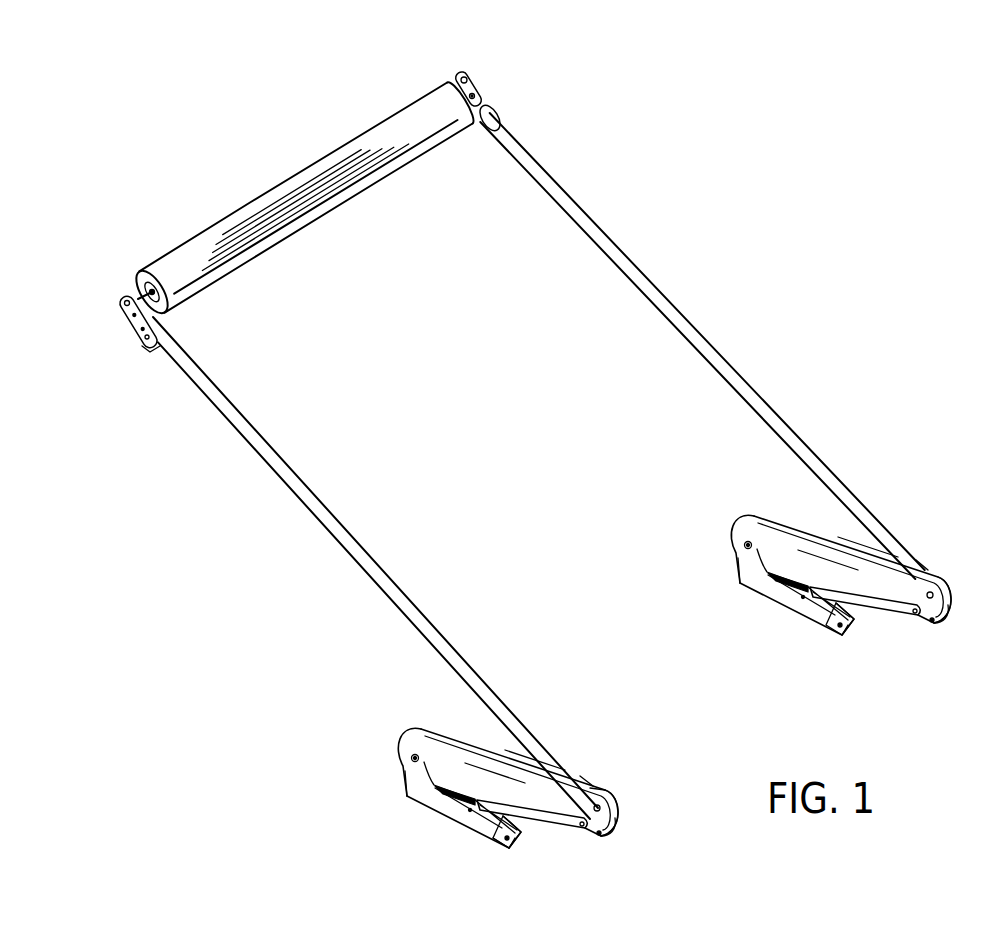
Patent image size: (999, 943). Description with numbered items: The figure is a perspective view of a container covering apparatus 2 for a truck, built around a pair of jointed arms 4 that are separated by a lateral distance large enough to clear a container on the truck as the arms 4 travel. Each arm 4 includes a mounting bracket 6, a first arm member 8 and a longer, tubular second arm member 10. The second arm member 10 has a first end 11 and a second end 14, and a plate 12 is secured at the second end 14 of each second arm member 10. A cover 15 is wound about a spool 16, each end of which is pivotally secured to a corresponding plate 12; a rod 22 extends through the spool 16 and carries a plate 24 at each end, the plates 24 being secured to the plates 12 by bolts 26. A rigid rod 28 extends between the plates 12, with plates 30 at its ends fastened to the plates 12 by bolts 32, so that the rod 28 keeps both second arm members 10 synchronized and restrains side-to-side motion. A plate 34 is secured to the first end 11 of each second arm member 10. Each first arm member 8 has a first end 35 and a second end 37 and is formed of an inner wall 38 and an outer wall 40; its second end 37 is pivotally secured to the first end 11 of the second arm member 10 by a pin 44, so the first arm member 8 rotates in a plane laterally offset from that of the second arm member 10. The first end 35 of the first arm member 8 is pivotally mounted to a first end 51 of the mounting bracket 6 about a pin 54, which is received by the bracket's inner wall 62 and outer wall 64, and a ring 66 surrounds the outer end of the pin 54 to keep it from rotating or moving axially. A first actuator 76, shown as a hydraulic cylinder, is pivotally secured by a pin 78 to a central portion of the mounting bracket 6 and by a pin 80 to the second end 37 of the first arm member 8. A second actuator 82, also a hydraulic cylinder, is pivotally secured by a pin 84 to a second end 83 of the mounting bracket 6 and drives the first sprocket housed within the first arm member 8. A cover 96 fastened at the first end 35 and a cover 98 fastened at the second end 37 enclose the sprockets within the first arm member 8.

The container covering apparatus 2 is at (708, 203).
The jointed arms 4 is at (825, 420).
The mounting bracket 6 is at (797, 606).
The first arm member 8 is at (852, 560).
The second arm member 10 is at (696, 344).
The first end 11 is at (945, 547).
The plate 12 is at (502, 128).
The second end 14 is at (157, 343).
The cover 15 is at (195, 246).
The spool 16 is at (143, 289).
The rod 22 is at (127, 300).
The plate 24 is at (473, 80).
The bolts 26 is at (130, 318).
The rod 28 is at (270, 253).
The plates 30 is at (490, 140).
The bolts 32 is at (490, 118).
The plate 34 is at (618, 770).
The first end 35 is at (728, 538).
The second end 37 is at (956, 625).
The inner wall 38 is at (828, 563).
The outer wall 40 is at (868, 510).
The pin 44 is at (903, 585).
The first end 51 is at (746, 575).
The pin 54 is at (722, 557).
The inner wall 62 is at (718, 597).
The outer wall 64 is at (860, 637).
The ring 66 is at (390, 803).
The first actuator 76 is at (866, 624).
The pin 78 is at (781, 619).
The pin 80 is at (937, 643).
The second actuator 82 is at (838, 590).
The second end 83 is at (830, 652).
The pin 84 is at (810, 645).
The cover 96 is at (841, 547).
The cover 98 is at (966, 600).